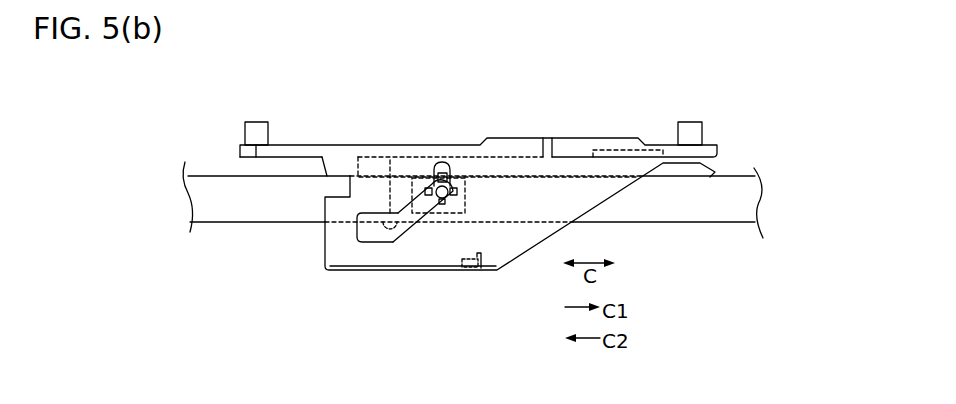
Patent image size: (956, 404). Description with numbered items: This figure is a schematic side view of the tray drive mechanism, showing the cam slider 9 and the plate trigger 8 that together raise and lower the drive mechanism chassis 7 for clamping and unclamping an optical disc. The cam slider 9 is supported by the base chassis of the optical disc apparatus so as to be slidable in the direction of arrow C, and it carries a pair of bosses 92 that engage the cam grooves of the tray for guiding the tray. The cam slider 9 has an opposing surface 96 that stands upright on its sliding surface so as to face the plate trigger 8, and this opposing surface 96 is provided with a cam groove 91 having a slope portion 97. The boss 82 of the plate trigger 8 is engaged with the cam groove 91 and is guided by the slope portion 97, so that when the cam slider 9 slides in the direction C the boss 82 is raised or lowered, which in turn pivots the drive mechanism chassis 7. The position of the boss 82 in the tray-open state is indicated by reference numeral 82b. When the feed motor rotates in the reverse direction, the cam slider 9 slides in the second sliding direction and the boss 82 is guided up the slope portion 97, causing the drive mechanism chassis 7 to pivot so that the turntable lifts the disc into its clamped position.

The drive mechanism chassis 7 is at (682, 224).
The plate trigger 8 is at (503, 170).
The cam slider 9 is at (573, 148).
The boss 82 is at (447, 186).
The position of the boss in the tray-open state 82b is at (390, 160).
The cam groove 91 is at (368, 234).
The bosses 92 is at (262, 132).
The opposing surface 96 is at (506, 264).
The slope portion 97 is at (412, 226).